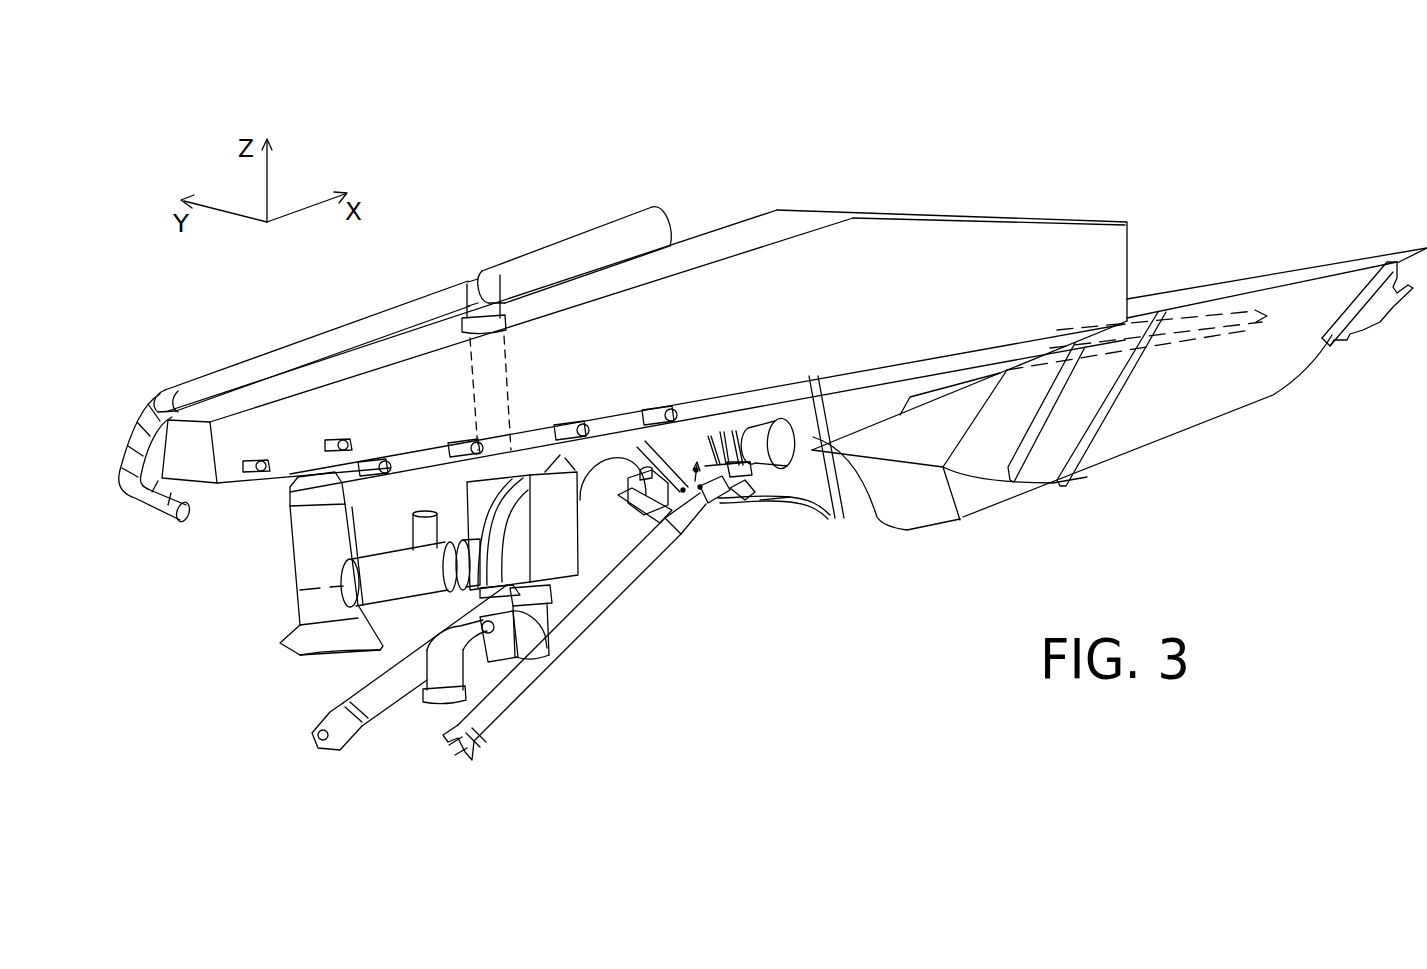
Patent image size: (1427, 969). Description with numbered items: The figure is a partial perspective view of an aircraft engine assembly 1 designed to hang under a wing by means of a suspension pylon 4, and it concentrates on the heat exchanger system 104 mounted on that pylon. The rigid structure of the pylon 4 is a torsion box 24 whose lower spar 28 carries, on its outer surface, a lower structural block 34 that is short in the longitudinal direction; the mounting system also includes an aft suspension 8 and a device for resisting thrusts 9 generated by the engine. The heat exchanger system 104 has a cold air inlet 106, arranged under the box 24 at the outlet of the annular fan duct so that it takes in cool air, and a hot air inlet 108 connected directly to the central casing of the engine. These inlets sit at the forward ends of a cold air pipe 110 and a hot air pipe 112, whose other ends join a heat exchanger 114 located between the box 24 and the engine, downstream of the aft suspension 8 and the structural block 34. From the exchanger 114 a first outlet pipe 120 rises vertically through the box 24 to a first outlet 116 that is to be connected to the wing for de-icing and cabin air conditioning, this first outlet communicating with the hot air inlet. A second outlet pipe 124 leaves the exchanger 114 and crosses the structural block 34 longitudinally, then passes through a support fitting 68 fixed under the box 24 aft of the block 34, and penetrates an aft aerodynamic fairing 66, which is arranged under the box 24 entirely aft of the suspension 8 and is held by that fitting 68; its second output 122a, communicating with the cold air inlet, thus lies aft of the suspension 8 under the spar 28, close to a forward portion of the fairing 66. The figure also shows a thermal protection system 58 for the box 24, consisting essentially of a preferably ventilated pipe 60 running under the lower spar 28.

The aircraft engine assembly 1 is at (785, 146).
The suspension pylon 4 is at (898, 194).
The aft suspension 8 is at (720, 500).
The device for resisting thrusts 9 is at (582, 638).
The box 24 is at (231, 392).
The lower spar 28 is at (228, 492).
The lower structural block 34 is at (703, 510).
The thermal protection system 58 is at (286, 563).
The ventilated pipe 60 is at (438, 482).
The aft aerodynamic fairing 66 is at (1128, 460).
The support fitting 68 is at (813, 487).
The heat exchanger system 104 is at (509, 626).
The cold air inlet 106 is at (297, 597).
The hot air inlet 108 is at (443, 703).
The cold air pipe 110 is at (385, 570).
The hot air pipe 112 is at (527, 633).
The heat exchanger 114 is at (547, 530).
The first outlet 116 is at (672, 215).
The first outlet pipe 120 is at (528, 257).
The second output 122a is at (893, 527).
The second outlet pipe 124 is at (633, 500).